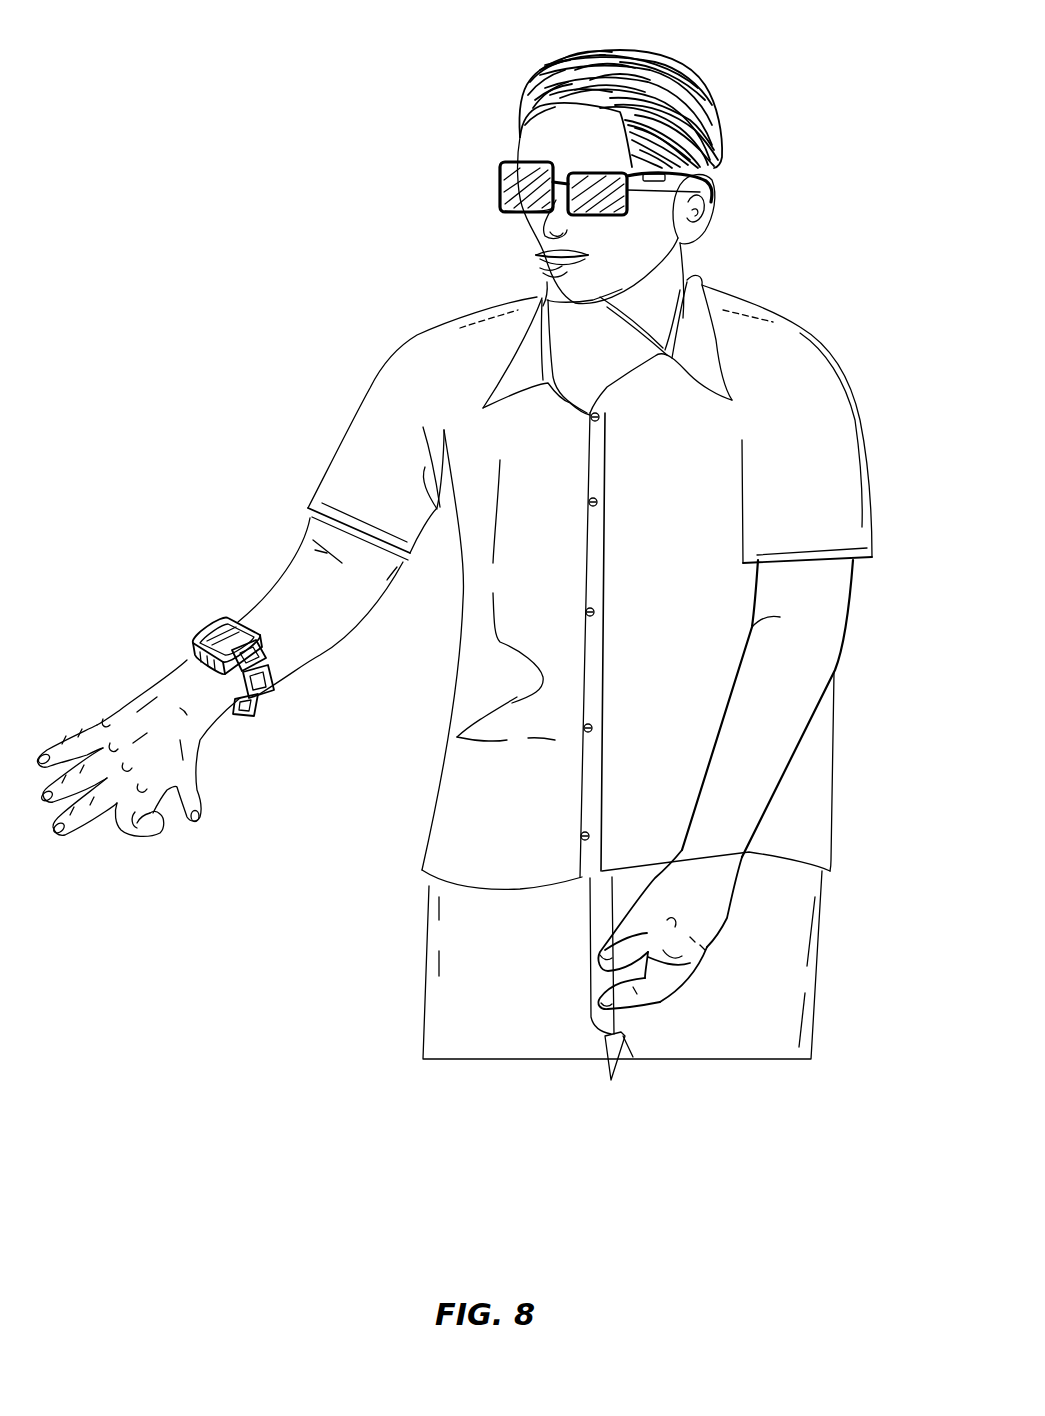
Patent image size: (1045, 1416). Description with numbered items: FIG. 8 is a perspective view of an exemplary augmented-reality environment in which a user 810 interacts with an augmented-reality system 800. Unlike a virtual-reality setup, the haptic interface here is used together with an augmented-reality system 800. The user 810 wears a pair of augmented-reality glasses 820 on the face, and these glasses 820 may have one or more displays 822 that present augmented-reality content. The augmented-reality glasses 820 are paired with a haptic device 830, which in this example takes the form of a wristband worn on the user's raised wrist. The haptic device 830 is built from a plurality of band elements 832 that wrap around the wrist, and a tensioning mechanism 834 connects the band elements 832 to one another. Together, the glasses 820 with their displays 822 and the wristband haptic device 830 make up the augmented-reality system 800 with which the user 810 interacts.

The augmented-reality system 800 is at (205, 80).
The user 810 is at (818, 333).
The augmented-reality glasses 820 is at (500, 175).
The display 822 is at (590, 205).
The haptic device 830 is at (207, 623).
The band elements 832 is at (262, 700).
The tensioning mechanism 834 is at (262, 667).